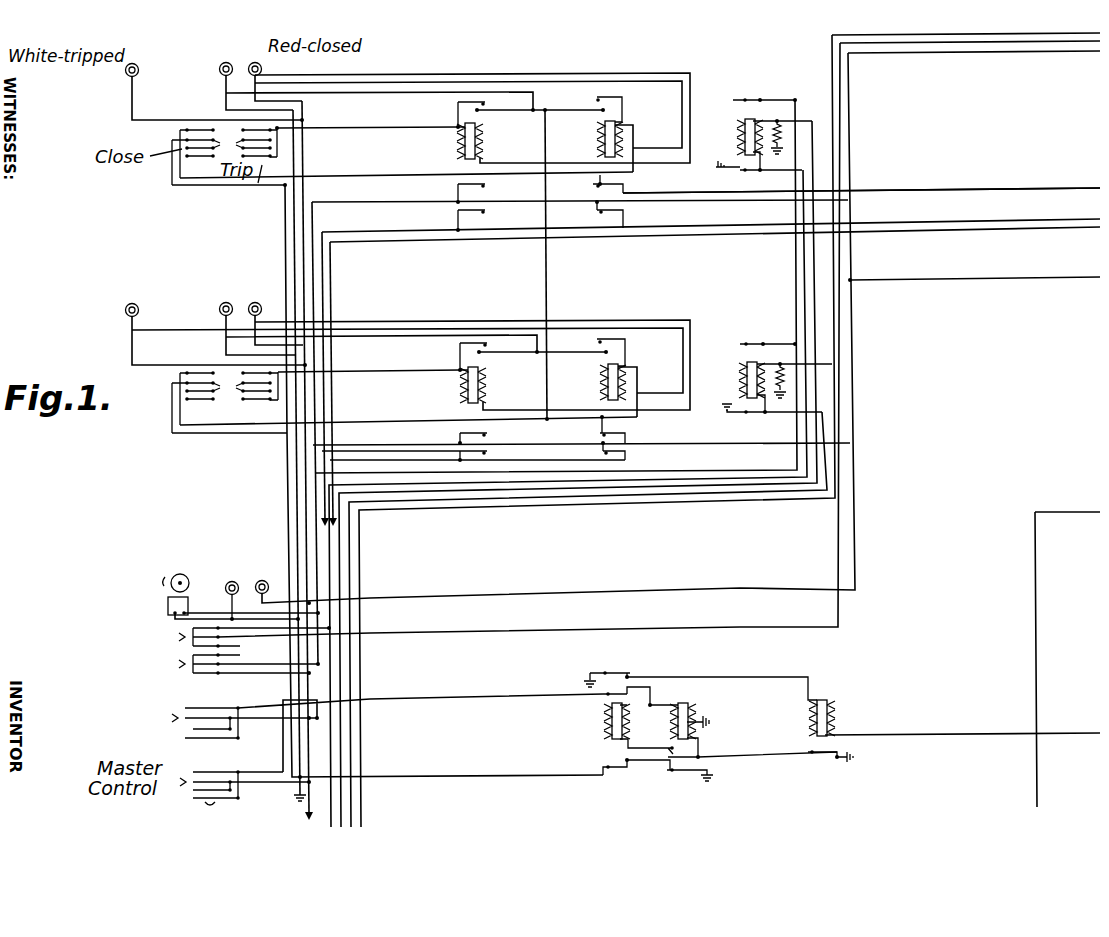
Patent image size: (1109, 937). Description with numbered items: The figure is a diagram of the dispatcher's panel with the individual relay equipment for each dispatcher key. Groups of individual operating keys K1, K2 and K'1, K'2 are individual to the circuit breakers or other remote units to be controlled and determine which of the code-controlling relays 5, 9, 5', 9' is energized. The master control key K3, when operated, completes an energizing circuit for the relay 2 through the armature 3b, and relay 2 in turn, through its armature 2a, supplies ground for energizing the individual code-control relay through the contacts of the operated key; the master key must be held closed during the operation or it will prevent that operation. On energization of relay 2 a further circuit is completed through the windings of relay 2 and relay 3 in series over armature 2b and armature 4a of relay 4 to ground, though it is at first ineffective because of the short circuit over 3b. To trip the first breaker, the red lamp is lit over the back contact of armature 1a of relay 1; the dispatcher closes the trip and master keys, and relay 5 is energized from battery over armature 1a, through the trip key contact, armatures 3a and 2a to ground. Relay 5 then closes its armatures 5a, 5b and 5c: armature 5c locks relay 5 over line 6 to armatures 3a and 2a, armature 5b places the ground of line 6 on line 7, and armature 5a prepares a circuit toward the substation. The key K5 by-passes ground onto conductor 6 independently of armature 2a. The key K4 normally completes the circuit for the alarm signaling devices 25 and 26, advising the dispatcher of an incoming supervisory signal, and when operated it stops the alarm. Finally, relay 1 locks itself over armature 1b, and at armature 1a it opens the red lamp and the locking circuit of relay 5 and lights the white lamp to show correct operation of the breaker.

The relay 1 is at (740, 139).
The armature of relay 1 1a is at (750, 100).
The armature of relay 1 1b is at (740, 173).
The relay 2 is at (690, 706).
The armature of relay 2 2a is at (683, 772).
The armature of relay 2 2b is at (700, 752).
The relay 3 is at (608, 736).
The armature of relay 3 3a is at (617, 768).
The armature of relay 3 3b is at (602, 697).
The relay 4 is at (954, 718).
The armature of relay 4 4a is at (815, 753).
The code-controlling relay 5 is at (457, 141).
The armature of relay 5 5a is at (452, 212).
The armature of relay 5 5b is at (457, 187).
The armature of relay 5 5c is at (457, 106).
The code-controlling relay 5' is at (542, 371).
The conductor 6 is at (549, 278).
The line 7 is at (951, 189).
The code-controlling relay 9 is at (598, 139).
The code-controlling relay 9' is at (594, 384).
The alarm signaling device 25 is at (180, 575).
The alarm signaling device 26 is at (237, 578).
The closing key K1 is at (200, 163).
The trip key K2 is at (262, 168).
The master control key K3 is at (200, 772).
The key K4 is at (188, 718).
The key K5 is at (185, 650).
The closing key K'1 is at (222, 421).
The trip key K'2 is at (250, 421).